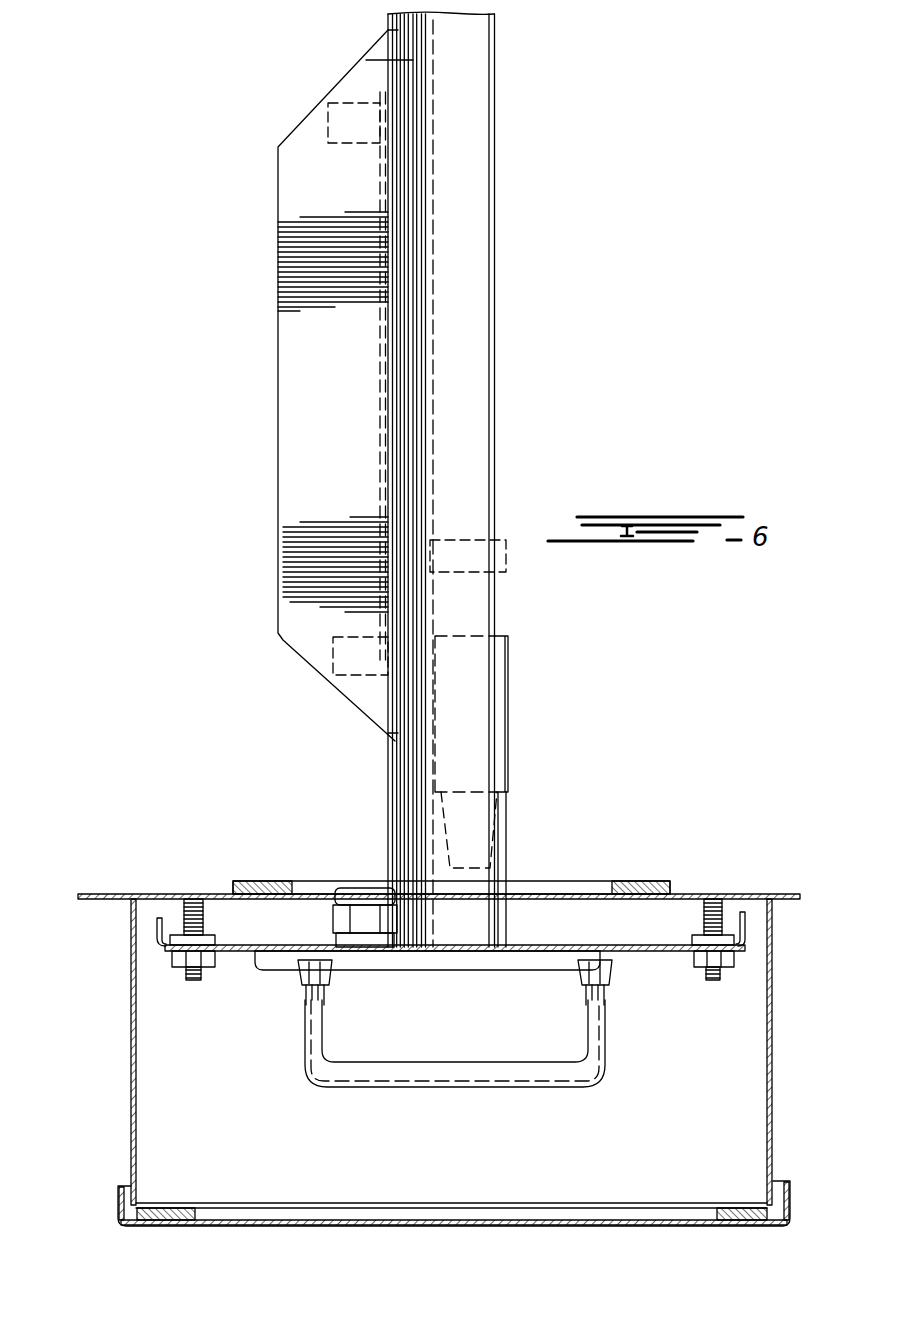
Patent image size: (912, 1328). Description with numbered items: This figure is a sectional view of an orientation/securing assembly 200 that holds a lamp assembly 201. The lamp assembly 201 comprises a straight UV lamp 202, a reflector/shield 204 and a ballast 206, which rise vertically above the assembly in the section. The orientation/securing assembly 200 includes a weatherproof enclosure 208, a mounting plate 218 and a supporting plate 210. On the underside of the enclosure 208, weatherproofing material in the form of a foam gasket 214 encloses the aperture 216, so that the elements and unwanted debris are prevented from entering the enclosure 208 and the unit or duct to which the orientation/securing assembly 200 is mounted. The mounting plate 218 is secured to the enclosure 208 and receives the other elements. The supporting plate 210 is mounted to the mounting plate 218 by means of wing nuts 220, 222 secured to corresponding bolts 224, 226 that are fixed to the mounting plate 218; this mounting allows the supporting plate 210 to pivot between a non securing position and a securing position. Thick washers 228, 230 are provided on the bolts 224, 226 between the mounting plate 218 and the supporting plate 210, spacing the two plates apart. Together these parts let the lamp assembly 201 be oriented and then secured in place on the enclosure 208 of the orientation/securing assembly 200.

The orientation/securing assembly 200 is at (106, 270).
The lamp assembly 201 is at (363, 776).
The straight UV lamp 202 is at (420, 388).
The reflector/shield 204 is at (508, 812).
The ballast 206 is at (300, 453).
The weatherproof enclosure 208 is at (777, 1080).
The supporting plate 210 is at (466, 970).
The foam gasket 214 is at (645, 881).
The aperture 216 is at (312, 881).
The mounting plate 218 is at (673, 951).
The wing nut 220 is at (300, 1040).
The wing nut 222 is at (596, 996).
The bolt 224 is at (300, 990).
The bolt 226 is at (607, 993).
The thick washer 228 is at (330, 976).
The thick washer 230 is at (557, 957).